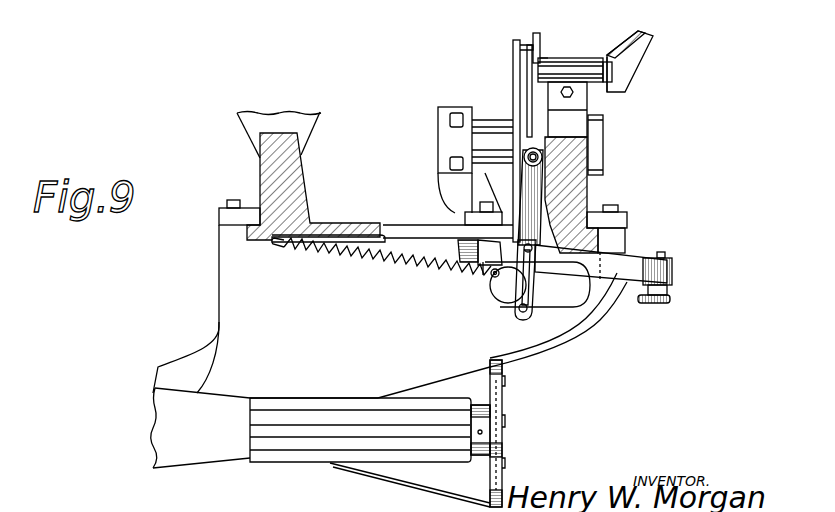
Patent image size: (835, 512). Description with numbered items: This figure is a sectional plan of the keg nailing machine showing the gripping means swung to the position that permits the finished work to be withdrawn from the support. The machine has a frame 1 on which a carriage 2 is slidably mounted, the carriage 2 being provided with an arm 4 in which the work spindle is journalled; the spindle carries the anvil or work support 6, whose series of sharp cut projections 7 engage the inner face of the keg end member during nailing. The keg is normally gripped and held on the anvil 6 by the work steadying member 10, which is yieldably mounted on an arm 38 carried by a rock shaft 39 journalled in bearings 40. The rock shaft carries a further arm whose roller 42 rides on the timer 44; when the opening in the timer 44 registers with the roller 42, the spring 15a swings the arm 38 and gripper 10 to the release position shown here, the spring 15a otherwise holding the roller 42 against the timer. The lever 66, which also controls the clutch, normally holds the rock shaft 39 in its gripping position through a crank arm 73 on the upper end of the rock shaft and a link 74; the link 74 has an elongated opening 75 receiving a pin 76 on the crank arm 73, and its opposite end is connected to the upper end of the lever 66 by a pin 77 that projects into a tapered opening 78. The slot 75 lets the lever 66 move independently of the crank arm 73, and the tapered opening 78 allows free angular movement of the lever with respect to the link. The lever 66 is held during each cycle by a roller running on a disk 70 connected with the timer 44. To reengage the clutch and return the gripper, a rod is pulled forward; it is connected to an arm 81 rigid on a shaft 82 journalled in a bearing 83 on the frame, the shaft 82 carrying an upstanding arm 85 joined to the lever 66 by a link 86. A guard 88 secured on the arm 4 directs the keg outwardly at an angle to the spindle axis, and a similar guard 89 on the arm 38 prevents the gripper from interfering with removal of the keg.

The hopper 1 is at (307, 184).
The carriage 2 is at (333, 299).
The arm 4 is at (184, 458).
The anvil 6 is at (498, 400).
The sharp cut projections 7 is at (503, 421).
The gripping member 10 is at (656, 304).
The spring 15a is at (420, 291).
The arm 38 is at (627, 262).
The rock shaft 39 is at (505, 300).
The bearings 40 is at (572, 299).
The roller 42 is at (460, 270).
The timer 44 is at (511, 50).
The lever 66 is at (604, 151).
The disk 70 is at (534, 118).
The crank arm 73 is at (491, 280).
The link 74 is at (600, 199).
The elongated opening 75 is at (527, 314).
The pin 76 is at (540, 255).
The pin 77 is at (600, 163).
The tapered opening 78 is at (546, 168).
The arm 81 is at (646, 36).
The shaft 82 is at (634, 77).
The bearing 83 is at (580, 95).
The upstanding arm 85 is at (541, 56).
The link 86 is at (521, 100).
The guard 88 is at (420, 488).
The guard 89 is at (630, 297).